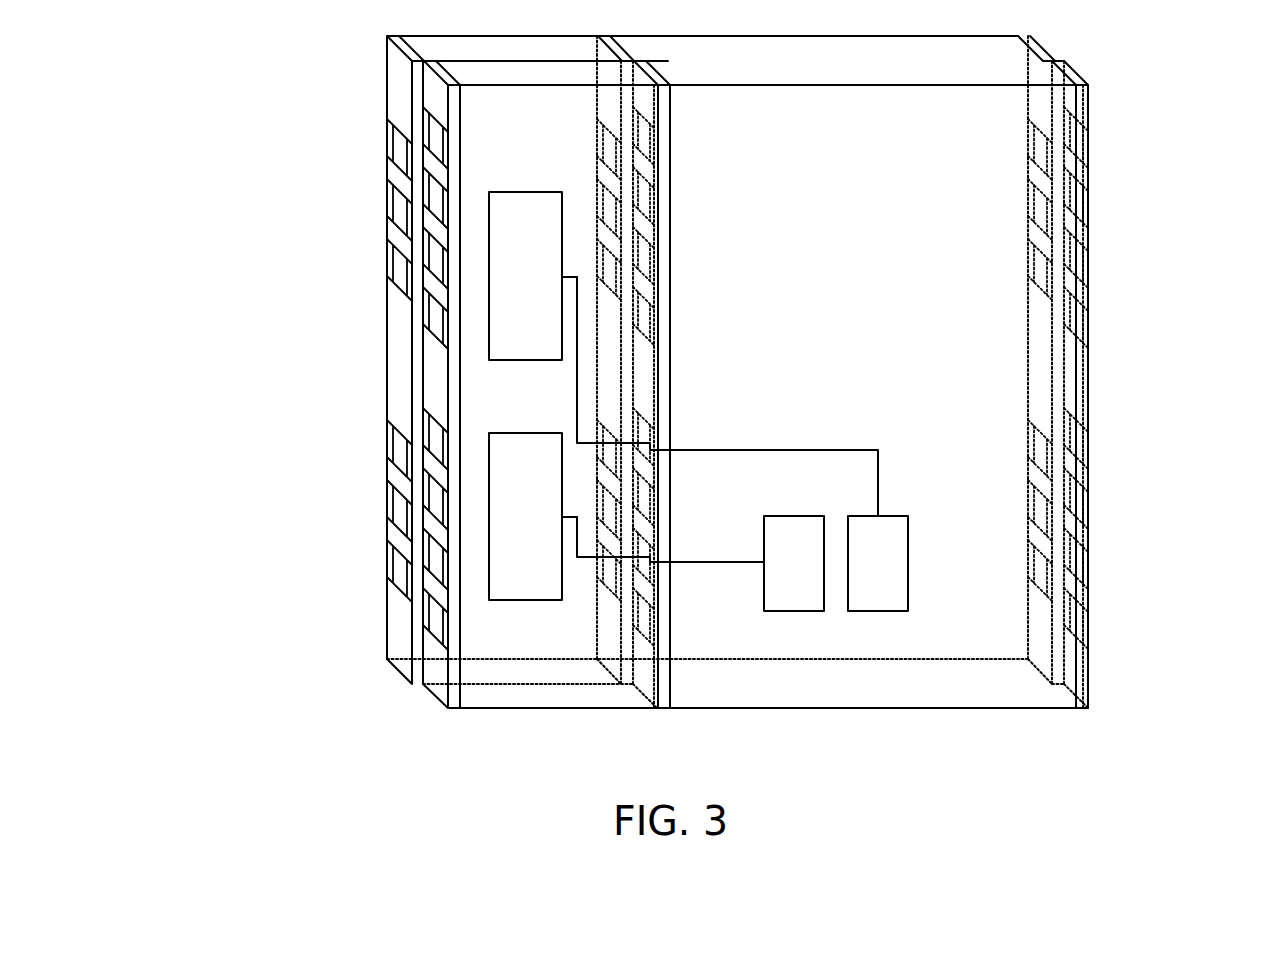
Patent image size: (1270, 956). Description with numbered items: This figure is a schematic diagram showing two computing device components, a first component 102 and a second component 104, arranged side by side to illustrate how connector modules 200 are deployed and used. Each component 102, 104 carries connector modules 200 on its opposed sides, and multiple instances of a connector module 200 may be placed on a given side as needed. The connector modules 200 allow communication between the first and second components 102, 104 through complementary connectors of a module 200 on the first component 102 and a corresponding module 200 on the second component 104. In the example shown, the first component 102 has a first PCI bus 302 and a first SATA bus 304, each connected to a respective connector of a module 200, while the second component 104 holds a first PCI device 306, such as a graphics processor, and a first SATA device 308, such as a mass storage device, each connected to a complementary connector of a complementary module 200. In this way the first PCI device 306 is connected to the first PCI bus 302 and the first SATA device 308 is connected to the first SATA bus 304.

The first component 102 is at (899, 160).
The second component 104 is at (546, 146).
The connector module 200 is at (1122, 534).
The first PCI bus 302 is at (810, 578).
The first SATA bus 304 is at (900, 578).
The first PCI device 306 is at (542, 532).
The first SATA device 308 is at (542, 288).